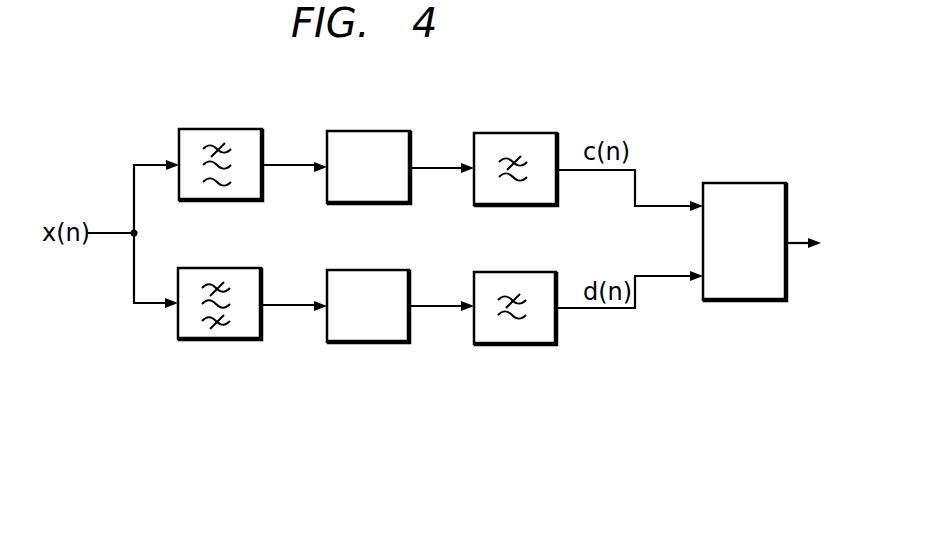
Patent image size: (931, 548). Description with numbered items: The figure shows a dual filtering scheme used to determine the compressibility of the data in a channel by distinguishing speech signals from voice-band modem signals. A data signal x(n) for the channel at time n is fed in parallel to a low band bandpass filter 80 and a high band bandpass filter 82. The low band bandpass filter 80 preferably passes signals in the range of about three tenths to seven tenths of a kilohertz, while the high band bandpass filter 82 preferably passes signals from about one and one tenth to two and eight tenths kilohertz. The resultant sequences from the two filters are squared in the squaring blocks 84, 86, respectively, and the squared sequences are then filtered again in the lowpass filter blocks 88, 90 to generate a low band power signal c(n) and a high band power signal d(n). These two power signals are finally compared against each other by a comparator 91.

The low band bandpass filter 80 is at (215, 129).
The high band bandpass filter 82 is at (214, 268).
The squaring block 84 is at (362, 131).
The squaring block 86 is at (362, 270).
The lowpass filter block 88 is at (511, 133).
The lowpass filter block 90 is at (511, 272).
The comparator 91 is at (761, 183).